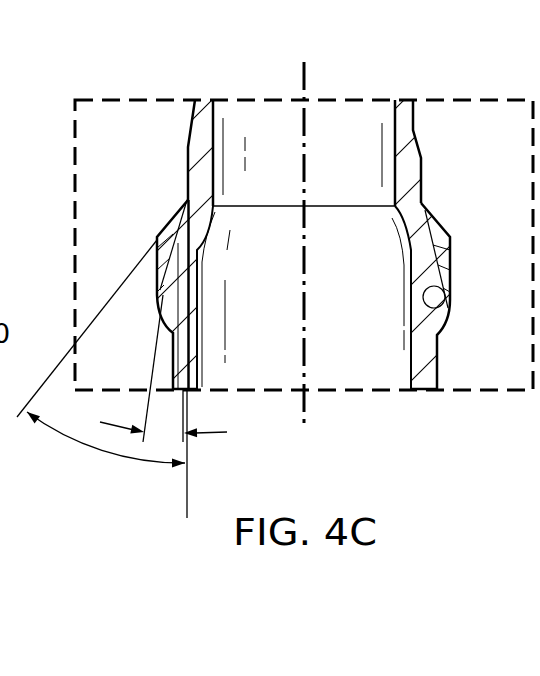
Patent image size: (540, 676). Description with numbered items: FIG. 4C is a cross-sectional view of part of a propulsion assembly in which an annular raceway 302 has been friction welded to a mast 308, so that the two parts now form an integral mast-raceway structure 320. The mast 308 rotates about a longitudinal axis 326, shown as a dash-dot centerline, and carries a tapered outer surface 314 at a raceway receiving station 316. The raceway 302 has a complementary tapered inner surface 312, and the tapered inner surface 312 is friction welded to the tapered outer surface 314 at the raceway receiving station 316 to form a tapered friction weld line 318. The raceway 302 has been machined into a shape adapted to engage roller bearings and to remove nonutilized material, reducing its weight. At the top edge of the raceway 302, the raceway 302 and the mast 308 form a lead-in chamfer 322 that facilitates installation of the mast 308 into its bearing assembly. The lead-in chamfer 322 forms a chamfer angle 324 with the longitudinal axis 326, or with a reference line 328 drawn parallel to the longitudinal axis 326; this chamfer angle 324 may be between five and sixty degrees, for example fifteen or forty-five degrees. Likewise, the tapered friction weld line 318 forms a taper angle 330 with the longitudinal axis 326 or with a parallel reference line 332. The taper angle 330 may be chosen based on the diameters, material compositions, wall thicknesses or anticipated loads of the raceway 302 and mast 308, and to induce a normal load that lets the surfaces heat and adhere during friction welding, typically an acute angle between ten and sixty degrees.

The annular raceway 302 is at (450, 285).
The mast 308 is at (188, 140).
The tapered inner surface 312 is at (447, 318).
The tapered outer surface 314 is at (452, 233).
The raceway receiving station 316 is at (168, 186).
The tapered friction weld line 318 is at (448, 272).
The integral mast-raceway structure 320 is at (423, 158).
The lead-in chamfer 322 is at (178, 210).
The chamfer angle 324 is at (100, 452).
The longitudinal axis 326 is at (300, 72).
The reference line 328 is at (185, 505).
The taper angle 330 is at (212, 433).
The reference line 332 is at (185, 402).